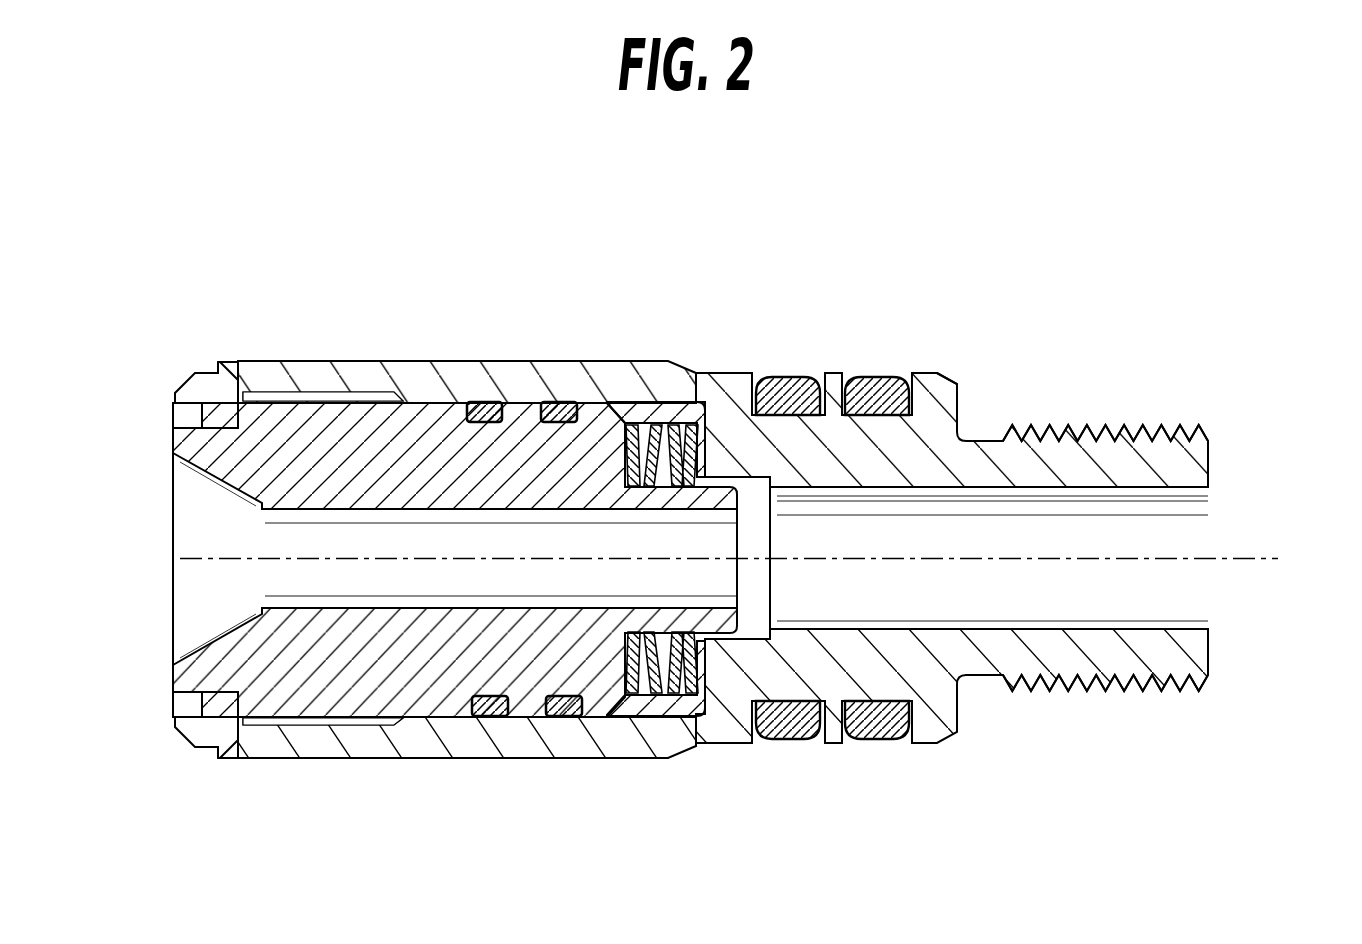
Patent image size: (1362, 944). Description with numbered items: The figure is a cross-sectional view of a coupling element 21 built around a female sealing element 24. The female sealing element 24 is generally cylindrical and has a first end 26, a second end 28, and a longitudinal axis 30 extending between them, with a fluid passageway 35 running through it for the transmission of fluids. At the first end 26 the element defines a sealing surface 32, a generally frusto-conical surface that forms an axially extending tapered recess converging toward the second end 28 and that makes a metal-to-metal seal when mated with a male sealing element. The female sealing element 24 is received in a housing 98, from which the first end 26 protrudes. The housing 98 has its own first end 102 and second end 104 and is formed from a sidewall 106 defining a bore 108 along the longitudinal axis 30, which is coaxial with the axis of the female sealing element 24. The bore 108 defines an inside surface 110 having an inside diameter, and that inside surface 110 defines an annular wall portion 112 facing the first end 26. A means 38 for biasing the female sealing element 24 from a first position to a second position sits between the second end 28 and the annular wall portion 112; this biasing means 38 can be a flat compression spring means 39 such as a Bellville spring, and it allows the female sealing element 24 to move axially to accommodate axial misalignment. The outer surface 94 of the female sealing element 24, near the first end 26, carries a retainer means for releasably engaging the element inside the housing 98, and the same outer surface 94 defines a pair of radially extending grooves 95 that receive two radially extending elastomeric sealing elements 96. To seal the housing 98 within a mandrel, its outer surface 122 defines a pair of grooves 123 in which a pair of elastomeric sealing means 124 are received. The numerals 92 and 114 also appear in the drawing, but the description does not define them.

The coupling element 21 is at (810, 196).
The female sealing element 24 is at (440, 361).
The first end 26 is at (173, 450).
The second end 28 is at (720, 477).
The longitudinal axis 30 is at (1247, 560).
The sealing surface 32 is at (203, 650).
The fluid passageway 35 is at (1192, 531).
The means for biasing 38 is at (672, 694).
The flat compression spring means 39 is at (652, 694).
The flow direction 92 is at (186, 536).
The outer surface 94 is at (346, 724).
The radially extending grooves 95 is at (560, 402).
The radially extending elastomeric sealing elements 96 is at (562, 716).
The housing 98 is at (417, 758).
The first end 102 is at (228, 362).
The second end 104 is at (1208, 680).
The sidewall 106 is at (1210, 648).
The bore 108 is at (368, 396).
The inside surface 110 is at (308, 396).
The annular wall portion 112 is at (683, 401).
The cap ring 114 is at (205, 747).
The outer surface 122 is at (942, 374).
The grooves 123 is at (880, 380).
The elastomeric sealing means 124 is at (880, 739).